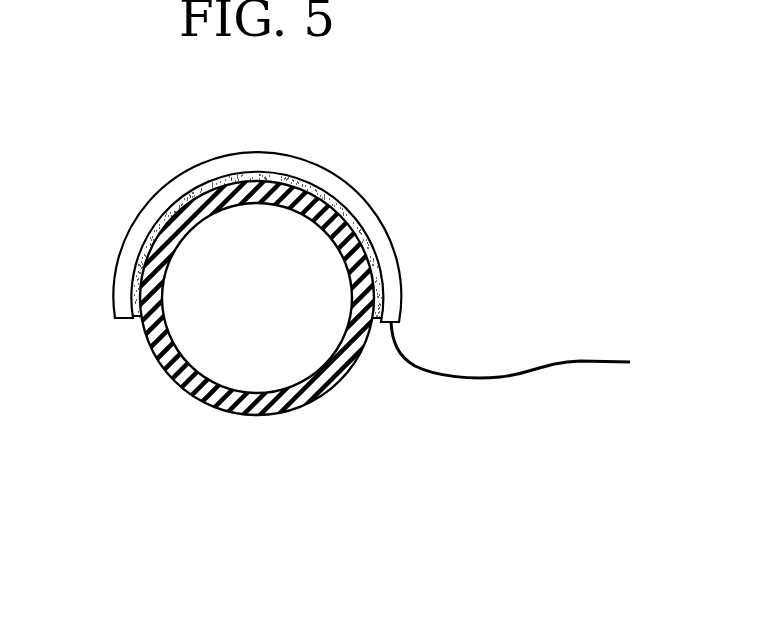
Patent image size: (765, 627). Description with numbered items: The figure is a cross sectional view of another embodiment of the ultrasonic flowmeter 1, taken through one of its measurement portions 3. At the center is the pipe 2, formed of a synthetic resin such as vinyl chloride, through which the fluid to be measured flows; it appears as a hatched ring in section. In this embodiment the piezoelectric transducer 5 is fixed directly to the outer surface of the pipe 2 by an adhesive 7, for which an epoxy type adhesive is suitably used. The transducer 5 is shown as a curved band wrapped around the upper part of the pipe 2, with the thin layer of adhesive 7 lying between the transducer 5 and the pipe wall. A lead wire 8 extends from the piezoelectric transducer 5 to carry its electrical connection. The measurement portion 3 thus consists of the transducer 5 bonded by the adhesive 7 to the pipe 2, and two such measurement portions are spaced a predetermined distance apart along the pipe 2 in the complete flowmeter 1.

The ultrasonic flowmeter 1 is at (363, 150).
The pipe 2 is at (164, 371).
The measurement portion 3 is at (127, 196).
The piezoelectric transducer 5 is at (257, 163).
The adhesive 7 is at (363, 223).
The lead wire 8 is at (448, 370).